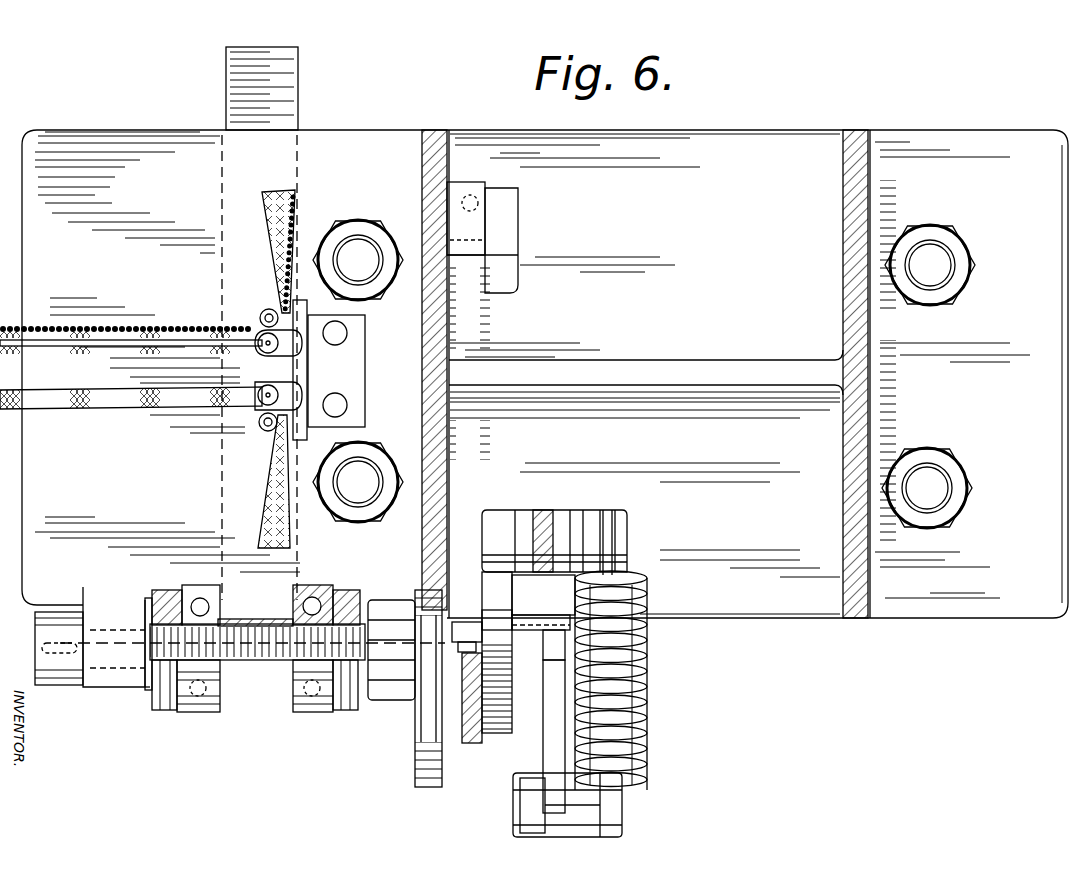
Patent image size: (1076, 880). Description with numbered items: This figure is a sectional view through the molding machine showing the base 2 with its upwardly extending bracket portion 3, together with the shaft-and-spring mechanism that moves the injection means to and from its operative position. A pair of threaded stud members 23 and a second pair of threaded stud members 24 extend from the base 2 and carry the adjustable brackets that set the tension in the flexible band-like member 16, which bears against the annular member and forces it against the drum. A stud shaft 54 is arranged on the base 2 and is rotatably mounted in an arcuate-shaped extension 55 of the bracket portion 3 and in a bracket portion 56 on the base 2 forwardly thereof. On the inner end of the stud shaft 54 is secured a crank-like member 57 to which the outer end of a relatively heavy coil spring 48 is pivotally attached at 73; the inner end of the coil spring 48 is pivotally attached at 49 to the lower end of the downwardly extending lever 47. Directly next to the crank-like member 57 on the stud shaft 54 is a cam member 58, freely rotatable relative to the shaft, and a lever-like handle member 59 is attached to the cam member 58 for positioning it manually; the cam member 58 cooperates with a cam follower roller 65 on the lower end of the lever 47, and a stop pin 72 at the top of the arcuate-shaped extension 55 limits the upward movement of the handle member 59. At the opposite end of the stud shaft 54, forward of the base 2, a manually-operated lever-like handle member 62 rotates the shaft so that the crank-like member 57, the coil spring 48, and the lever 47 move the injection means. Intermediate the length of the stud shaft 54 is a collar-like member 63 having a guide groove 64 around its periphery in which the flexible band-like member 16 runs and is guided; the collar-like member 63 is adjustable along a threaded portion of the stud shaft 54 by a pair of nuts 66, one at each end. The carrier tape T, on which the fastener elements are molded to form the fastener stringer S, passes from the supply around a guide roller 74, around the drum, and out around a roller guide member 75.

The base 2 is at (935, 598).
The bracket portion 3 is at (433, 140).
The flexible band-like member 16 is at (228, 48).
The threaded stud members 23 is at (360, 255).
The threaded stud members 24 is at (931, 250).
The lever 47 is at (546, 515).
The coil spring 48 is at (632, 680).
The pivot 49 is at (610, 525).
The stud shaft 54 is at (150, 640).
The arcuate-shaped extension 55 is at (424, 788).
The bracket portion 56 is at (100, 690).
The crank-like member 57 is at (549, 712).
The cam member 58 is at (503, 725).
The lever-like handle member 59 is at (472, 745).
The manually-operated lever-like handle member 62 is at (53, 690).
The collar-like member 63 is at (318, 705).
The guide groove 64 is at (297, 702).
The roller 65 is at (497, 522).
The nuts 66 is at (168, 700).
The stop pin 72 is at (466, 622).
The pivot 73 is at (625, 818).
The guide roller 74 is at (263, 430).
The roller guide member 75 is at (262, 320).
The fastener stringer S is at (272, 232).
The flexible tape T is at (268, 490).